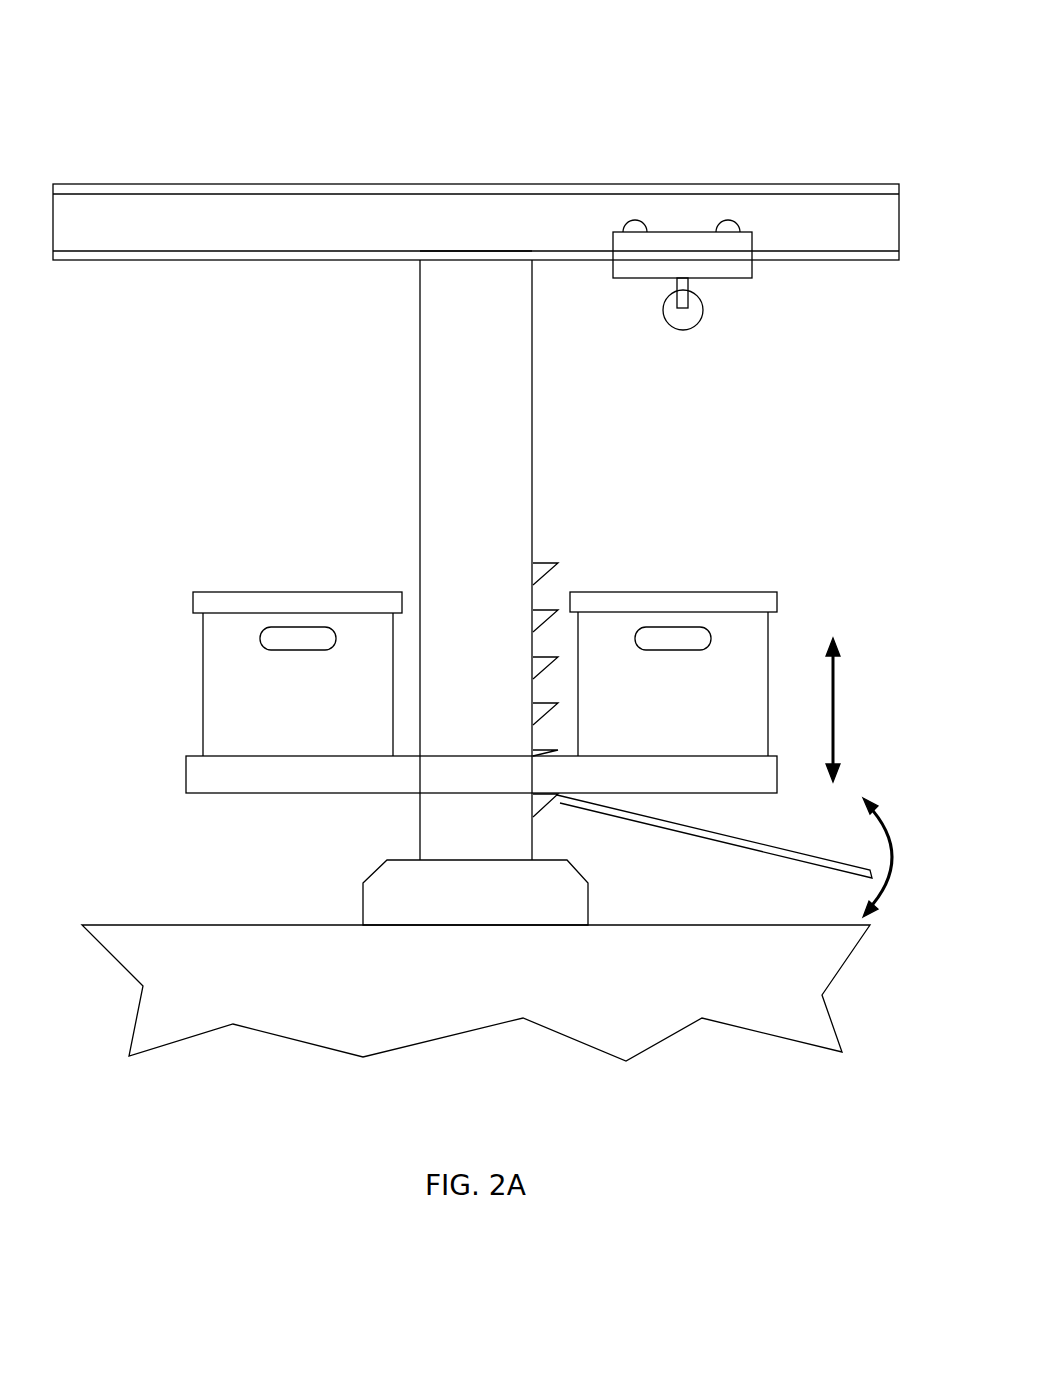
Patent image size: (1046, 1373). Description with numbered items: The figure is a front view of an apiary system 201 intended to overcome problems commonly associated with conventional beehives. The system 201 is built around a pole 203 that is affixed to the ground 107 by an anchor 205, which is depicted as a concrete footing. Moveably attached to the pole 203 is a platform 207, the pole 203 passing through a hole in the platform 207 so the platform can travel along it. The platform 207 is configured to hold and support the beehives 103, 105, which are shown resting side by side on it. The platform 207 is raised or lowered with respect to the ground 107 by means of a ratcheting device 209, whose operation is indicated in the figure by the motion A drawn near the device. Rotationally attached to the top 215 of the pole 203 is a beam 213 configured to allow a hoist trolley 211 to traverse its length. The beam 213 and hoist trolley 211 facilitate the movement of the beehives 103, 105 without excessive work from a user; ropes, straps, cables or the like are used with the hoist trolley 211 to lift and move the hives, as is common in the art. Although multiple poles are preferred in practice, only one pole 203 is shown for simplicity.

The apiary system 201 is at (127, 59).
The beam 213 is at (355, 183).
The top of the pole 215 is at (484, 246).
The hoist trolley 211 is at (738, 311).
The pole 203 is at (420, 405).
The lower hive 103 is at (203, 655).
The upper hive 105 is at (768, 658).
The platform 207 is at (185, 772).
The ratcheting device 209 is at (583, 828).
The motion A is at (890, 842).
The anchor 205 is at (362, 902).
The ground 107 is at (157, 925).